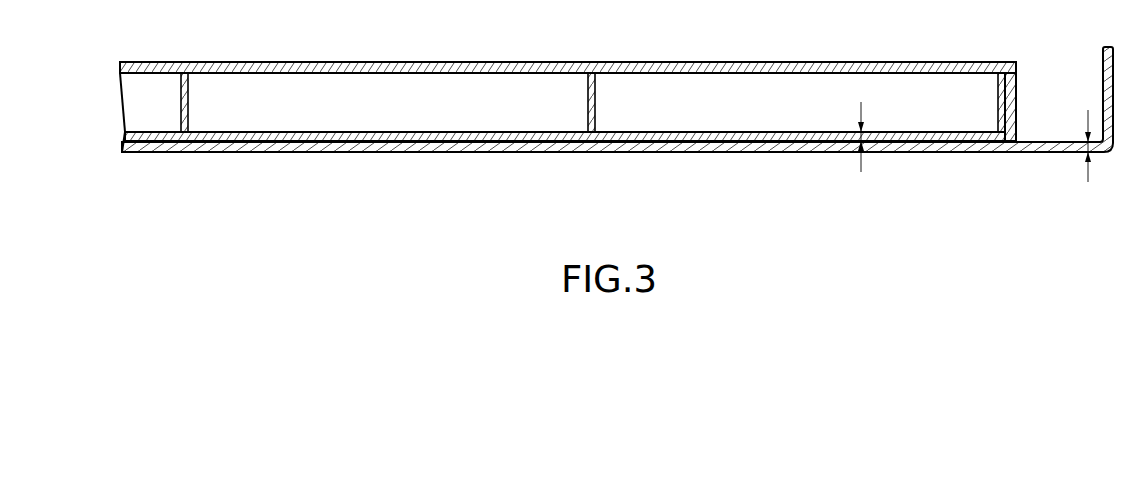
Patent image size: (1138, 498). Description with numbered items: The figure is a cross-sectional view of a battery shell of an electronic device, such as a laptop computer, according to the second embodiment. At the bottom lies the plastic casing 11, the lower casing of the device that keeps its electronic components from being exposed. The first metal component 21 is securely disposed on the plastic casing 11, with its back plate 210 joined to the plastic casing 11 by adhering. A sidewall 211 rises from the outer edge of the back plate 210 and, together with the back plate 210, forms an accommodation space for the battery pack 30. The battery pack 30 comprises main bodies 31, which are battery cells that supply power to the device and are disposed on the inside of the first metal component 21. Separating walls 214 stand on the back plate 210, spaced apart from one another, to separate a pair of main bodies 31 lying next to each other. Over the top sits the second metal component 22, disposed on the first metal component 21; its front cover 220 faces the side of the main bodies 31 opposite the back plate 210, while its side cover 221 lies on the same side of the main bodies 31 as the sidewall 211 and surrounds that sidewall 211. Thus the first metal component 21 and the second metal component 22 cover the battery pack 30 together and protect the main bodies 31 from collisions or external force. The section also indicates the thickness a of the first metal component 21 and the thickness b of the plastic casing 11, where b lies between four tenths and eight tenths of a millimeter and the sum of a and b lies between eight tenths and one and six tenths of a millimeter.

The plastic casing 11 is at (726, 155).
The first metal component 21 is at (496, 145).
The back plate 210 is at (954, 146).
The sidewall 211 is at (1012, 100).
The separating wall 214 is at (189, 99).
The second metal component 22 is at (775, 55).
The front cover 220 is at (848, 62).
The side cover 221 is at (1013, 93).
The battery pack 30 is at (109, 110).
The main body 31 is at (508, 99).
The thickness of the first metal component a is at (882, 136).
The thickness of the plastic casing b is at (1082, 141).